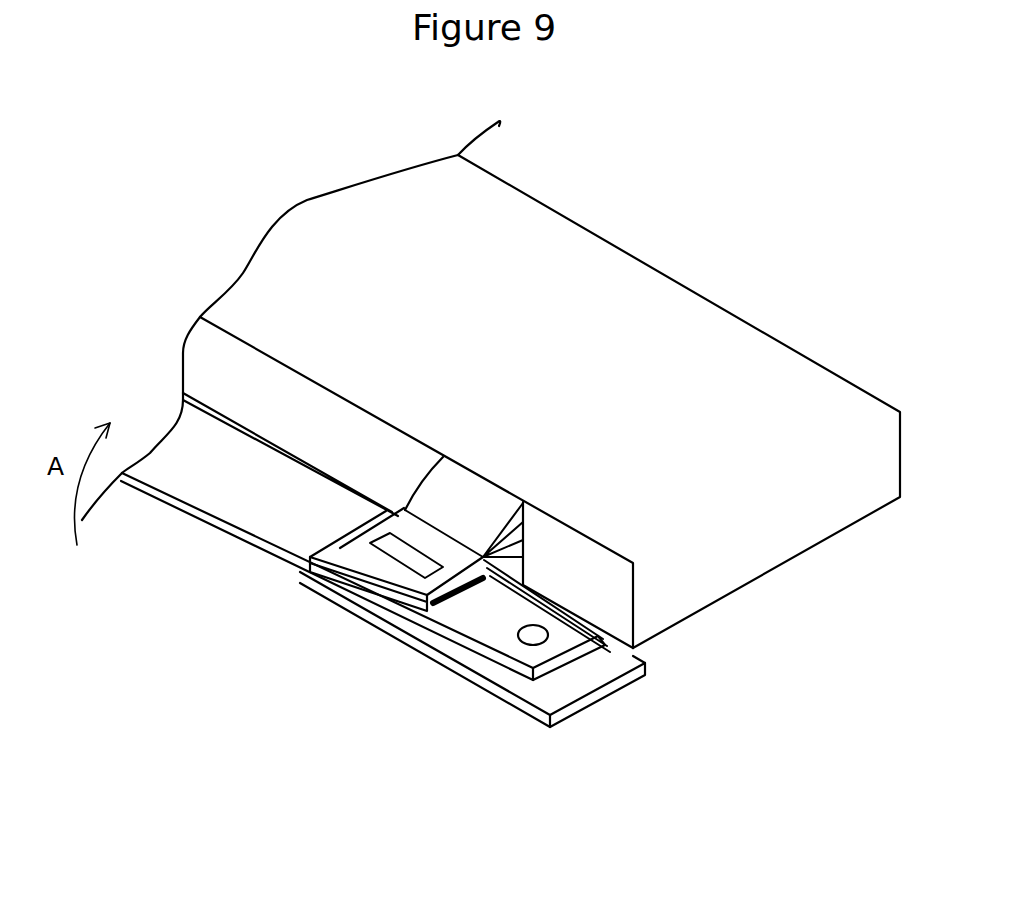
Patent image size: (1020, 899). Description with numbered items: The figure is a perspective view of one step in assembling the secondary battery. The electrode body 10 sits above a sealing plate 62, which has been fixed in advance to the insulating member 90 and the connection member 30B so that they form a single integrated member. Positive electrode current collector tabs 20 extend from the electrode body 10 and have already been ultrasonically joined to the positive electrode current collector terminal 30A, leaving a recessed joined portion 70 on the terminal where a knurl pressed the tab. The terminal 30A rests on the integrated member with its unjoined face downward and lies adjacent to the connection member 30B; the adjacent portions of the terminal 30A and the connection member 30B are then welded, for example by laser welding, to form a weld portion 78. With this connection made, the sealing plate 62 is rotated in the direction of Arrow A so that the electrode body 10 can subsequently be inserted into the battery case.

The electrode body 10 is at (735, 373).
The positive electrode current collector tabs 20 is at (492, 550).
The positive electrode current collector terminal 30A is at (338, 543).
The connection member 30B is at (600, 652).
The sealing plate 62 is at (237, 484).
The joined portion 70 is at (407, 557).
The weld portion 78 is at (462, 600).
The insulating member 90 is at (560, 677).